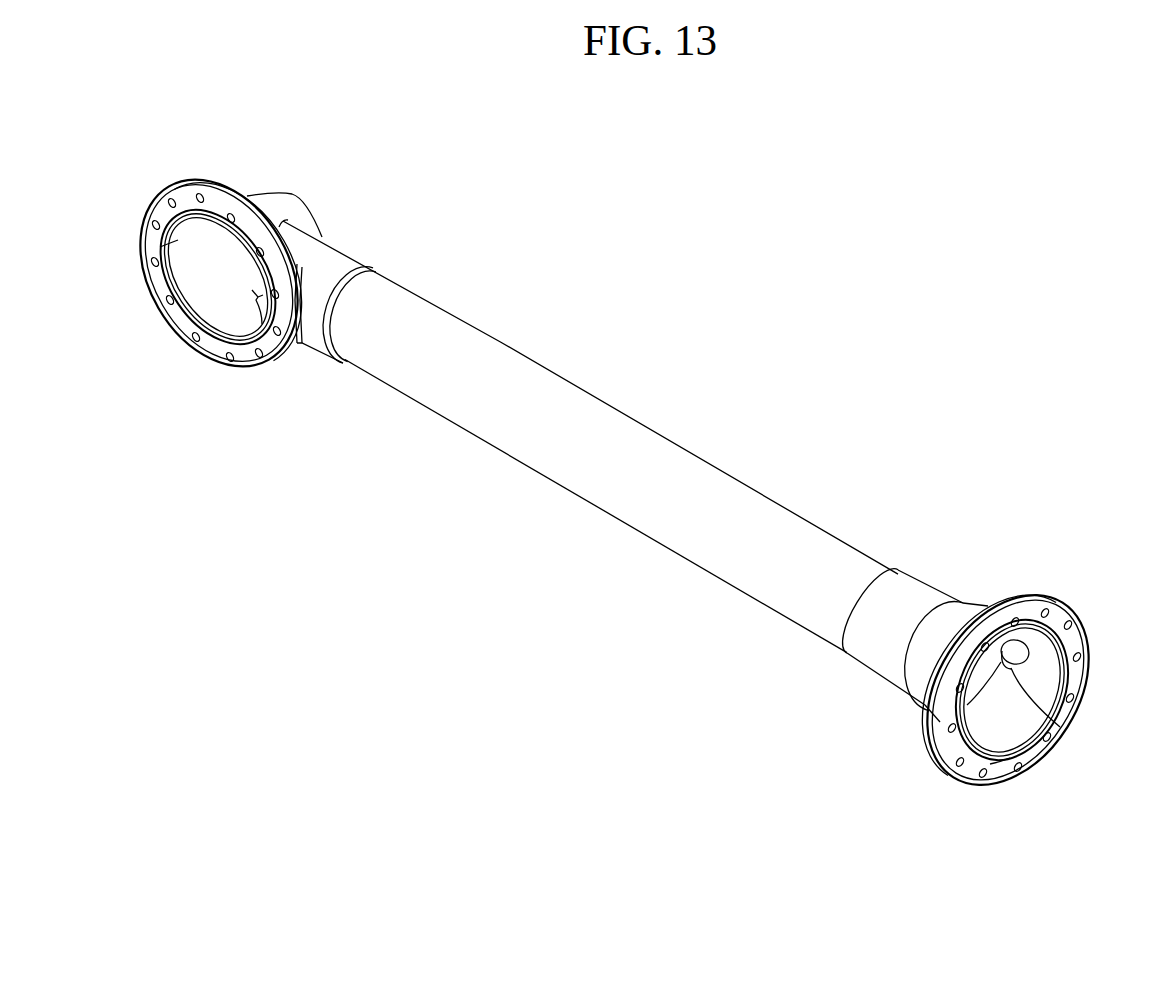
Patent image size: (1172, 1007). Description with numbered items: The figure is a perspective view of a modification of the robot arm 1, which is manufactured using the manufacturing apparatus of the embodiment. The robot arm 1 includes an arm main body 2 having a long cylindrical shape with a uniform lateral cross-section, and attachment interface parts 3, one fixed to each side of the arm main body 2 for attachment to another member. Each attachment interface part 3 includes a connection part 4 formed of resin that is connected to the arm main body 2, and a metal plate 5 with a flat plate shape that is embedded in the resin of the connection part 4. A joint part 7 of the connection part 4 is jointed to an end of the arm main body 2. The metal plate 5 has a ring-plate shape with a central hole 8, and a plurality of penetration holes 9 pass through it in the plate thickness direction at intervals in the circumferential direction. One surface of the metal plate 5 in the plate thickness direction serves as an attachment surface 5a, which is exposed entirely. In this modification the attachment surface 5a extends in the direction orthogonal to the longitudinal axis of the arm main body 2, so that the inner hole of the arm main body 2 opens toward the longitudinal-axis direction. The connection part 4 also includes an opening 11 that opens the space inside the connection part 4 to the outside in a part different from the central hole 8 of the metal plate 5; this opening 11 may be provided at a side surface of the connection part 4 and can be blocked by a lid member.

The robot arm 1 is at (558, 246).
The arm main body 2 is at (624, 398).
The attachment interface part 3 is at (243, 138).
The connection part 4 is at (300, 205).
The metal plate 5 is at (176, 346).
The attachment surface 5a is at (163, 297).
The joint part 7 is at (338, 258).
The central hole 8 is at (160, 247).
The penetration holes 9 is at (155, 263).
The opening 11 is at (1060, 727).